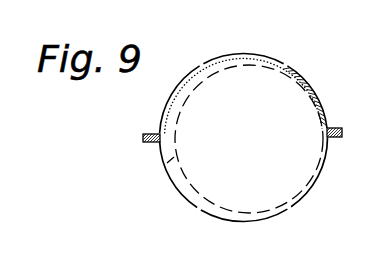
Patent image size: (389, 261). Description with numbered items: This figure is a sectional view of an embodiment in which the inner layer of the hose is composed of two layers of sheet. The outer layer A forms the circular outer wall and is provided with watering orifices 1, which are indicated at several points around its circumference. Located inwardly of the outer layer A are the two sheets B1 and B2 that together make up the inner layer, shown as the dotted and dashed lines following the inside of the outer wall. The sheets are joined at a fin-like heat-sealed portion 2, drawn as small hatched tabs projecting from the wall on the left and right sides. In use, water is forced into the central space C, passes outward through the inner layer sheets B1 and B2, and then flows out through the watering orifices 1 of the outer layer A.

The watering orifices 1 is at (201, 62).
The fin-like heat-sealed portion 2 is at (157, 133).
The outer layer A is at (247, 53).
The inner layer sheet B1 is at (303, 74).
The inner layer sheet B2 is at (170, 164).
The space C is at (253, 148).